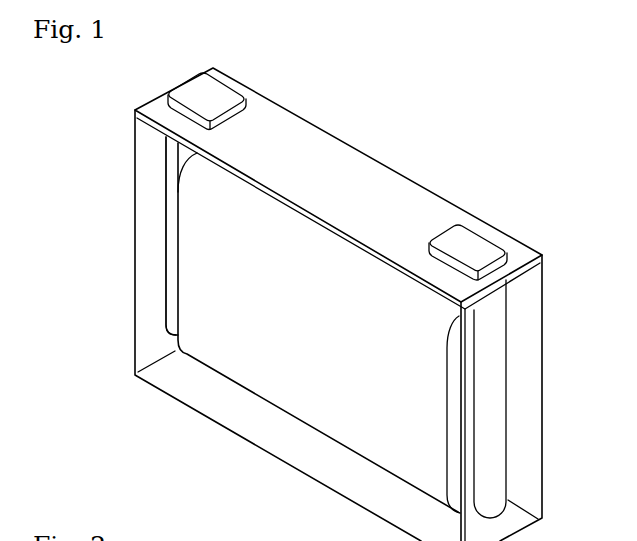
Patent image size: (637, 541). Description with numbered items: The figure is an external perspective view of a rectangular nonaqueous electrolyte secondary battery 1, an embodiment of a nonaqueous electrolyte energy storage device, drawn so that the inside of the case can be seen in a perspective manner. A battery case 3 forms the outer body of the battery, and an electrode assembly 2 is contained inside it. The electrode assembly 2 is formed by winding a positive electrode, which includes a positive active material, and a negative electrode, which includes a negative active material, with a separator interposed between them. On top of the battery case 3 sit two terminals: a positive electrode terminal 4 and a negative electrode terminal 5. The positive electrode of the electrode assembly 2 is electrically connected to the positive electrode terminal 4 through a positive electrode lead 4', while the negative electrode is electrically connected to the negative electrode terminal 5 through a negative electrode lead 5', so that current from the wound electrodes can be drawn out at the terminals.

The nonaqueous electrolyte secondary battery 1 is at (443, 150).
The electrode assembly 2 is at (319, 328).
The battery case 3 is at (135, 200).
The positive electrode terminal 4 is at (207, 77).
The negative electrode terminal 5 is at (468, 226).
The positive electrode lead 4' is at (137, 236).
The negative electrode lead 5' is at (523, 399).